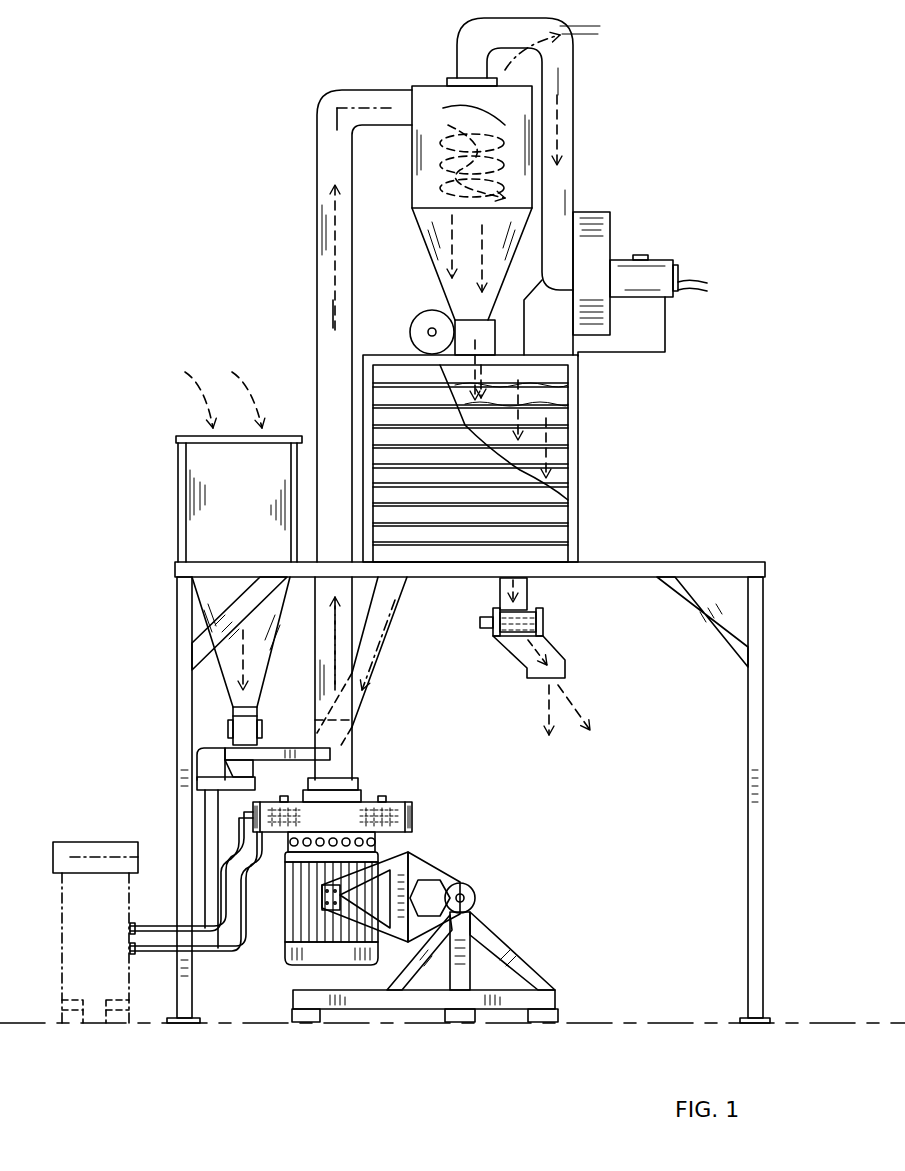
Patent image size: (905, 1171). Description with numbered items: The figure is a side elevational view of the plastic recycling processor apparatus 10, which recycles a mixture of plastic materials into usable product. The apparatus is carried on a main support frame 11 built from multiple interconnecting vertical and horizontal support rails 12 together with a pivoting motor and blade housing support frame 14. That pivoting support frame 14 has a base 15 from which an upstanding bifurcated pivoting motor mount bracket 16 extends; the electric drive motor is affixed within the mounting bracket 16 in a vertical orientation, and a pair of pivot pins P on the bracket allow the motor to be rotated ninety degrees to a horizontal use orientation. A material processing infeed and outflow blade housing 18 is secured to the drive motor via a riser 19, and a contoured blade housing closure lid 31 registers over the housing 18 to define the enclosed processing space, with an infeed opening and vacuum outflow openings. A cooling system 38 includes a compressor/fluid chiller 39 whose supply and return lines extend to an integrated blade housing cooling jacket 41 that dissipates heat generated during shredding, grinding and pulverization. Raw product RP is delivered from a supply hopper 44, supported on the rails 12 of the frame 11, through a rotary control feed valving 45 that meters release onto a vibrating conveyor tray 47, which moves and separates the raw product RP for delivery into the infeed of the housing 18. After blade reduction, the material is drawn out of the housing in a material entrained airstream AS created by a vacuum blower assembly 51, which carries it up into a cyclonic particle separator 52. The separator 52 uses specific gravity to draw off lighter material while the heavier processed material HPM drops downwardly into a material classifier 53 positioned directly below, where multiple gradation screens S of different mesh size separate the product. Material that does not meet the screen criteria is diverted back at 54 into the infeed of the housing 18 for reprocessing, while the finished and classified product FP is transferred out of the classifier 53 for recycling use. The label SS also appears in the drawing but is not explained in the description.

The plastic recycling processor apparatus 10 is at (714, 122).
The main support frame 11 is at (790, 535).
The vertical support rail 12 is at (755, 752).
The pivoting motor and blade housing support frame 14 is at (452, 872).
The base 15 is at (522, 1000).
The pivoting motor mount bracket 16 is at (415, 852).
The blade housing 18 is at (415, 812).
The riser 19 is at (378, 842).
The blade housing closure lid 31 is at (375, 790).
The cooling system 38 is at (250, 818).
The compressor/fluid chiller 39 is at (75, 840).
The blade housing cooling jacket 41 is at (388, 808).
The supply hopper 44 is at (205, 590).
The rotary control feed valving 45 is at (235, 727).
The vibrating conveyor tray 47 is at (243, 755).
The vacuum blower assembly 51 is at (625, 232).
The cyclonic particle separator 52 is at (412, 155).
The material classifier 53 is at (582, 467).
The diversion back to infeed 54 is at (385, 648).
The material entrained airstream AS is at (350, 108).
The heavier processed material HPM is at (427, 251).
The raw product RP is at (200, 392).
The gradation screens S is at (568, 395).
The screw separator SS is at (545, 620).
The finished and classified product FP is at (575, 700).
The pivot pins P is at (478, 898).